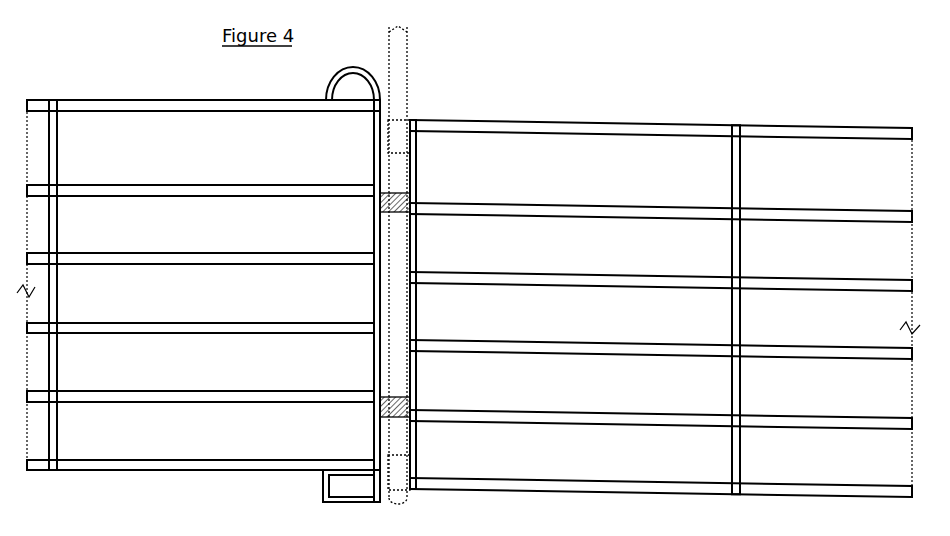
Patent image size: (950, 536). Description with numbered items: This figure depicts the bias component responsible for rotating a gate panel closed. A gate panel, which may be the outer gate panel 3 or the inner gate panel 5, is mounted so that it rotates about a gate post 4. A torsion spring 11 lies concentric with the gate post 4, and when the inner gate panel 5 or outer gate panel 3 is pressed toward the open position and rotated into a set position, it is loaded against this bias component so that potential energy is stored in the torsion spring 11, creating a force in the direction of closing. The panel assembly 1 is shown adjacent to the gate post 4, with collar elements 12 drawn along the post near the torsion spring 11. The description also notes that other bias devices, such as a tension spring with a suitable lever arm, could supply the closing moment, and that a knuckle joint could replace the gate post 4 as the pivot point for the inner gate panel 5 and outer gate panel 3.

The gate panel 1 is at (122, 118).
The outer gate panel 3 is at (665, 308).
The inner gate panel 5 is at (617, 222).
The gate post 4 is at (400, 68).
The torsion spring 11 is at (385, 205).
The collar 12 is at (418, 153).